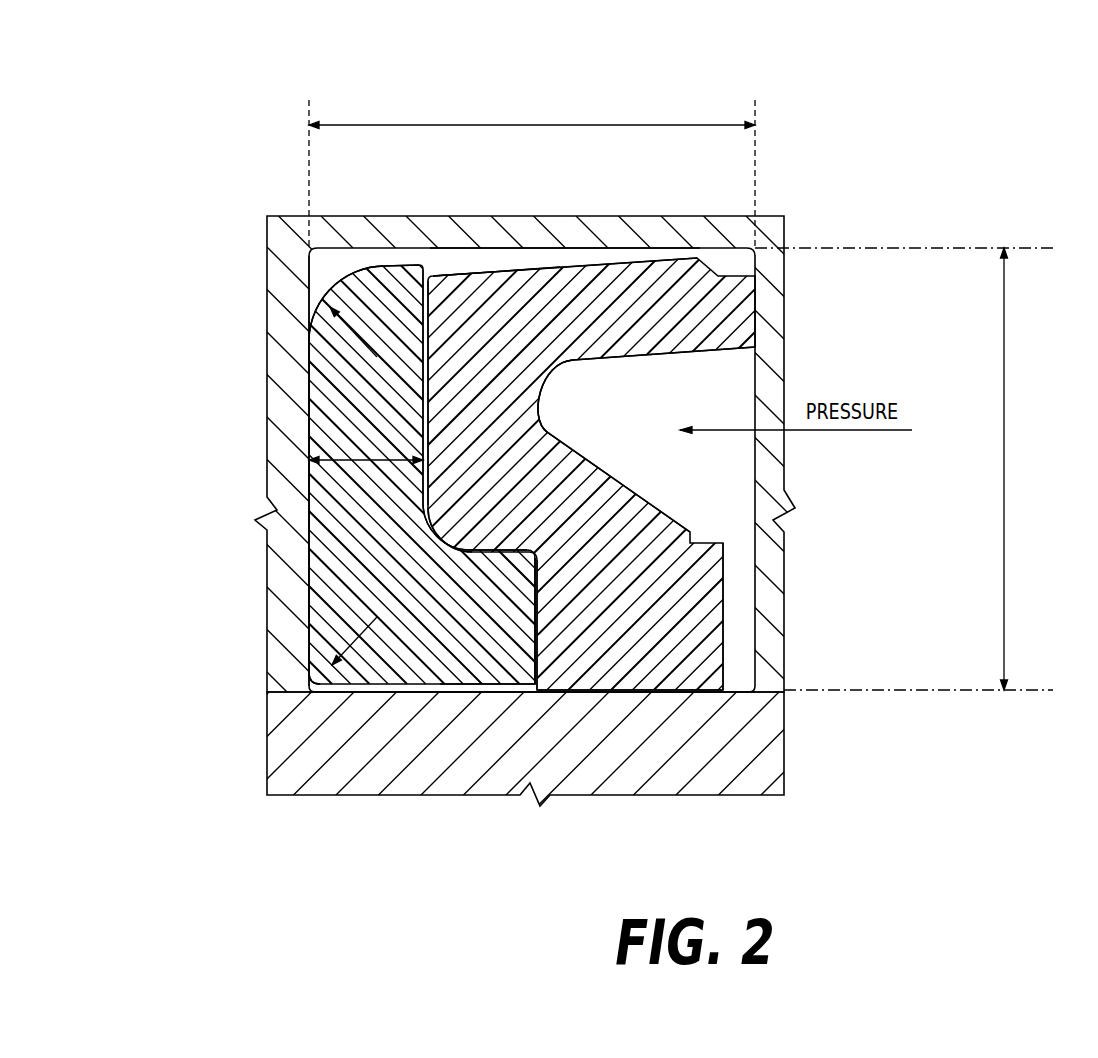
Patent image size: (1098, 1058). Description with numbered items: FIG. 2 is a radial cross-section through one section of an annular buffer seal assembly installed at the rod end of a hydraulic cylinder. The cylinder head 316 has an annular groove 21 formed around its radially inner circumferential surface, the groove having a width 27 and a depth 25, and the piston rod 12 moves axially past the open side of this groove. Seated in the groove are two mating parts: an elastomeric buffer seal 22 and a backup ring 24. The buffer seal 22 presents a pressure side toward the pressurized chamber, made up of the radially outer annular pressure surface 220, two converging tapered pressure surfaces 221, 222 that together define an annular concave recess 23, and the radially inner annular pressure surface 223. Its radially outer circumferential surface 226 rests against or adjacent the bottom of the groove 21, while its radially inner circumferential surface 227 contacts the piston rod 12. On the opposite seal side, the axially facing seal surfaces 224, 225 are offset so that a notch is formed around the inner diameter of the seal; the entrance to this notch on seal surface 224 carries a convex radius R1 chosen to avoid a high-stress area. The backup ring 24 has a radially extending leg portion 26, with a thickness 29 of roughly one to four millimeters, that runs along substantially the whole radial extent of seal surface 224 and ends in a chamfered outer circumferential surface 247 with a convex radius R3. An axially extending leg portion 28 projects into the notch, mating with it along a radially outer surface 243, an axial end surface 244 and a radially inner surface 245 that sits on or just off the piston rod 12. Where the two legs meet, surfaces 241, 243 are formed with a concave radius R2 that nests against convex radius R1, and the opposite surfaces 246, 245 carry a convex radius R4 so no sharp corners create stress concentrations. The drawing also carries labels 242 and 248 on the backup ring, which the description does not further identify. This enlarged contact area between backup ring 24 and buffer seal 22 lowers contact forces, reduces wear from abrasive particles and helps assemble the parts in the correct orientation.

The piston rod 12 is at (733, 748).
The cylinder head 316 is at (292, 232).
The annular groove 21 is at (528, 208).
The buffer seal 22 is at (677, 310).
The annular concave recess 23 is at (657, 470).
The backup ring 24 is at (343, 567).
The depth 25 is at (1004, 470).
The radially extending leg portion 26 is at (370, 293).
The width 27 is at (528, 125).
The axially extending leg portion 28 is at (527, 795).
The thickness 29 is at (330, 458).
The radially outer annular pressure surface 220 is at (725, 295).
The tapered pressure surface 221 is at (700, 345).
The tapered pressure surface 222 is at (653, 502).
The radially inner annular pressure surface 223 is at (723, 600).
The axially facing seal surface 224 is at (440, 348).
The axially facing seal surface 225 is at (540, 610).
The radially outer circumferential surface 226 is at (510, 277).
The radially inner circumferential surface 227 is at (655, 685).
The surface 241 is at (400, 398).
The seal fillet 242 is at (455, 545).
The radially outer surface 243 is at (475, 558).
The axial end surface 244 is at (538, 655).
The radially inner surface 245 is at (497, 655).
The surface 246 is at (308, 488).
The chamfered outer circumferential surface 247 is at (335, 293).
The seal bottom corner 248 is at (305, 675).
The convex radius R1 is at (438, 515).
The concave radius R2 is at (452, 537).
The convex radius R3 is at (353, 348).
The convex radius R4 is at (363, 647).